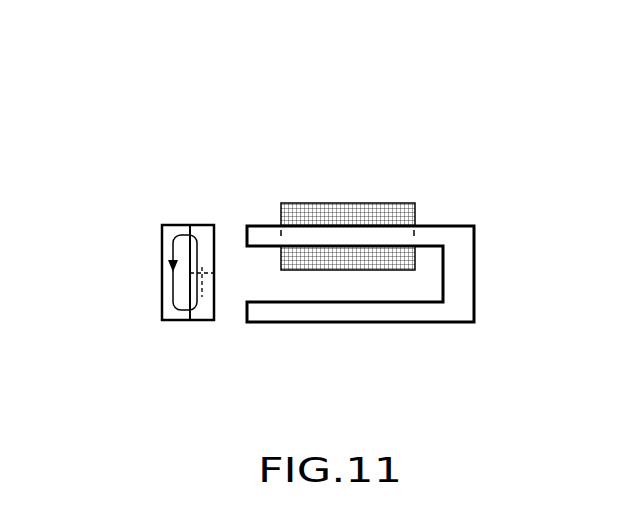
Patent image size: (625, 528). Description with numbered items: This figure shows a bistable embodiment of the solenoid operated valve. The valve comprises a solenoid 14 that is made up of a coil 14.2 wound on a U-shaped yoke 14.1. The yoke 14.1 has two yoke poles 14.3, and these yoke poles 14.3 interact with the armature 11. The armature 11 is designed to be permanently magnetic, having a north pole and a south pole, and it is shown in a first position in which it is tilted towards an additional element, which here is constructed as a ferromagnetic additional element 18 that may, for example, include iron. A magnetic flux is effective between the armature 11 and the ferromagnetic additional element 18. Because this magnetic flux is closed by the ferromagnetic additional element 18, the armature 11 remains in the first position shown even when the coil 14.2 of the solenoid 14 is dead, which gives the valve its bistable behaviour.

The solenoid 14 is at (192, 107).
The U-shaped yoke 14.1 is at (462, 237).
The coil 14.2 is at (328, 218).
The yoke poles 14.3 is at (253, 307).
The armature 11 is at (207, 322).
The ferromagnetic additional element 18 is at (163, 237).